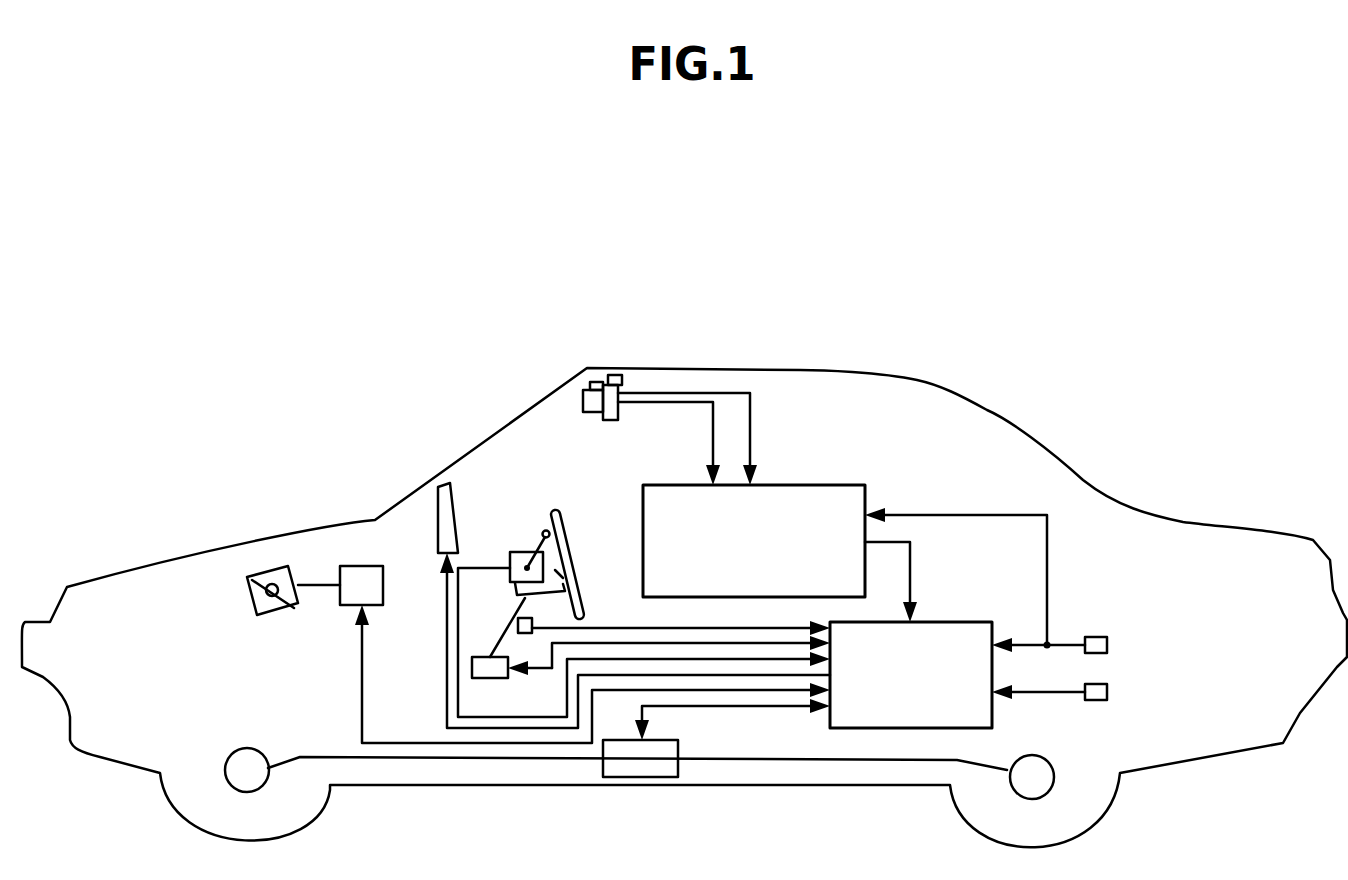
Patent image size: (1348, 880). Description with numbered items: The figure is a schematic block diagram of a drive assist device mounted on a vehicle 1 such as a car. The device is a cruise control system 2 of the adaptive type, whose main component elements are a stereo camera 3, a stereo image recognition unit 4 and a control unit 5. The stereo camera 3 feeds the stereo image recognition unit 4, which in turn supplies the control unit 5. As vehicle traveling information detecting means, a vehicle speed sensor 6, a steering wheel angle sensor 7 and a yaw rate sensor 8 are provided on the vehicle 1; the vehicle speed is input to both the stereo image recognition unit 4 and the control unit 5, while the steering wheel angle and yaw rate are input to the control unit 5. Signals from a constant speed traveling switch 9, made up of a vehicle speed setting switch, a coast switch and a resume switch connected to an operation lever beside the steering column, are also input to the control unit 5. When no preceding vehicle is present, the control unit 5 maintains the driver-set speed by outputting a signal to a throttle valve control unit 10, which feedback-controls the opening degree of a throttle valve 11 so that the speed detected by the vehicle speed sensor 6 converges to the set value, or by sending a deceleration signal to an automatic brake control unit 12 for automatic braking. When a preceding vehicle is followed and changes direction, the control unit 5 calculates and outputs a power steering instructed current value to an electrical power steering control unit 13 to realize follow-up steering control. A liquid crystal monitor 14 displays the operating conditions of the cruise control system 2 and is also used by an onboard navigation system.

The vehicle 1 is at (733, 235).
The cruise control system (ACC system) 2 is at (985, 455).
The stereo camera 3 is at (596, 385).
The stereo image recognition unit 4 is at (815, 485).
The control unit 5 is at (958, 622).
The vehicle speed sensor 6 is at (1107, 645).
The steering wheel angle sensor 7 is at (532, 610).
The yaw rate sensor 8 is at (1107, 692).
The constant speed traveling switch 9 is at (520, 552).
The throttle valve control unit 10 is at (357, 566).
The throttle valve 11 is at (260, 573).
The automatic brake control unit 12 is at (642, 777).
The electrical power steering control unit 13 is at (487, 678).
The liquid crystal monitor 14 is at (433, 522).